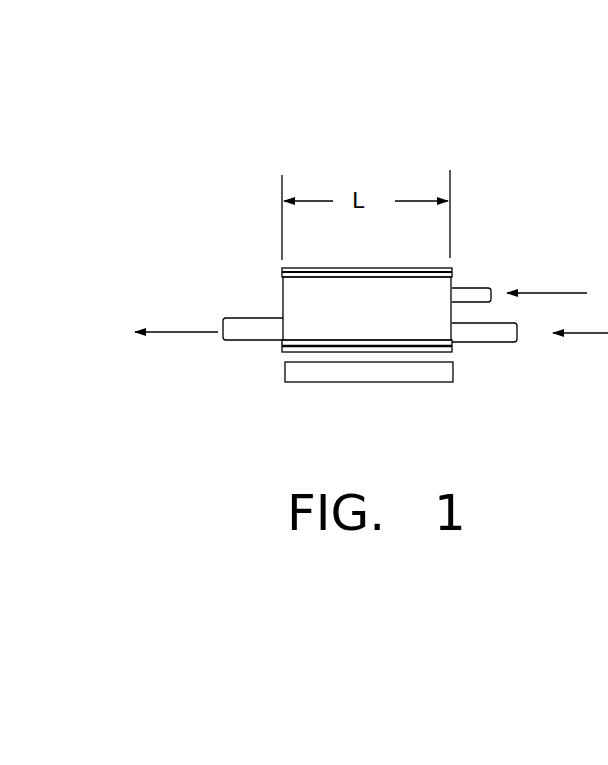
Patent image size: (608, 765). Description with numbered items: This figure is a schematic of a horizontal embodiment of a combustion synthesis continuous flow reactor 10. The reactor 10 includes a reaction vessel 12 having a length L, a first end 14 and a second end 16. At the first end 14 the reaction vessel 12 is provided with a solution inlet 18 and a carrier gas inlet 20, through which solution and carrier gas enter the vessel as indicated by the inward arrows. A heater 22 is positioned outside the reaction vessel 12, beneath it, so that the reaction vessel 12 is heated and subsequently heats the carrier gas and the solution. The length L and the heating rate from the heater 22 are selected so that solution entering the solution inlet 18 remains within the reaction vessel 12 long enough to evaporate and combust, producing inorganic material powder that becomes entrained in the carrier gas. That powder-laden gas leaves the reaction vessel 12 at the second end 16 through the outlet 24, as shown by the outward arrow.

The reactor 10 is at (318, 135).
The reaction vessel 12 is at (377, 318).
The first end 14 is at (470, 255).
The second end 16 is at (258, 262).
The solution inlet 18 is at (483, 287).
The carrier gas inlet 20 is at (485, 345).
The heater 22 is at (358, 382).
The outlet 24 is at (237, 343).